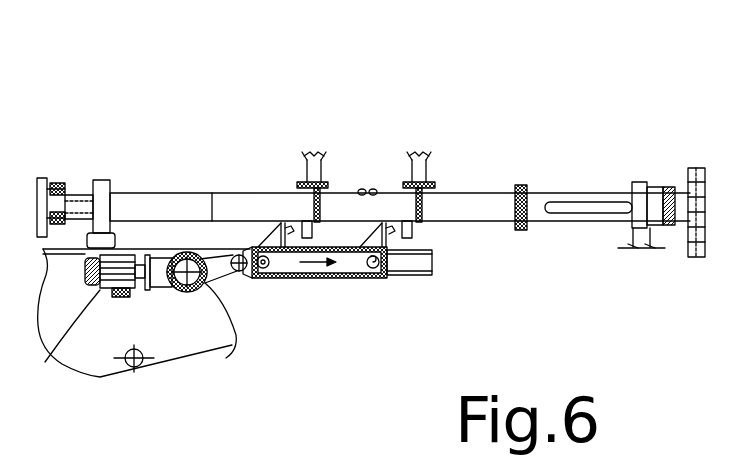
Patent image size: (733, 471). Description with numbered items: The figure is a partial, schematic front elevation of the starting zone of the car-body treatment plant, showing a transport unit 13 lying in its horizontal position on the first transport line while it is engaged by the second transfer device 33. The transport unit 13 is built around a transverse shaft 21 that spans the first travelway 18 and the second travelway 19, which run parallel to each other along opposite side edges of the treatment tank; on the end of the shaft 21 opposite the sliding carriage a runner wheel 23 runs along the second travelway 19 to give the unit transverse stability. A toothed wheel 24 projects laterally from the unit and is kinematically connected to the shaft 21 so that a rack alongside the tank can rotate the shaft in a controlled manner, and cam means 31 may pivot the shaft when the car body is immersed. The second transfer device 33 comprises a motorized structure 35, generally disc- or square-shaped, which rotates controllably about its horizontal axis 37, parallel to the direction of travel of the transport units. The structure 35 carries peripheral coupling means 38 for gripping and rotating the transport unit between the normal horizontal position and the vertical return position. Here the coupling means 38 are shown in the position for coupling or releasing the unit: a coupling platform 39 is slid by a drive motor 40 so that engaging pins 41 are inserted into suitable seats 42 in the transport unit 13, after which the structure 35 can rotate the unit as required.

The transport unit 13 is at (488, 162).
The first travelway 18 is at (632, 230).
The second travelway 19 is at (113, 237).
The transverse shaft 21 is at (485, 212).
The runner wheel 23 is at (103, 180).
The toothed wheel 24 is at (697, 167).
The cam means 31 is at (50, 158).
The second transfer device 33 is at (166, 382).
The structure 35 is at (193, 342).
The horizontal axis 37 is at (122, 365).
The coupling means 38 is at (336, 288).
The coupling platform 39 is at (382, 276).
The drive motor 40 is at (87, 272).
The engaging pins 41 is at (290, 222).
The seats 42 is at (318, 232).